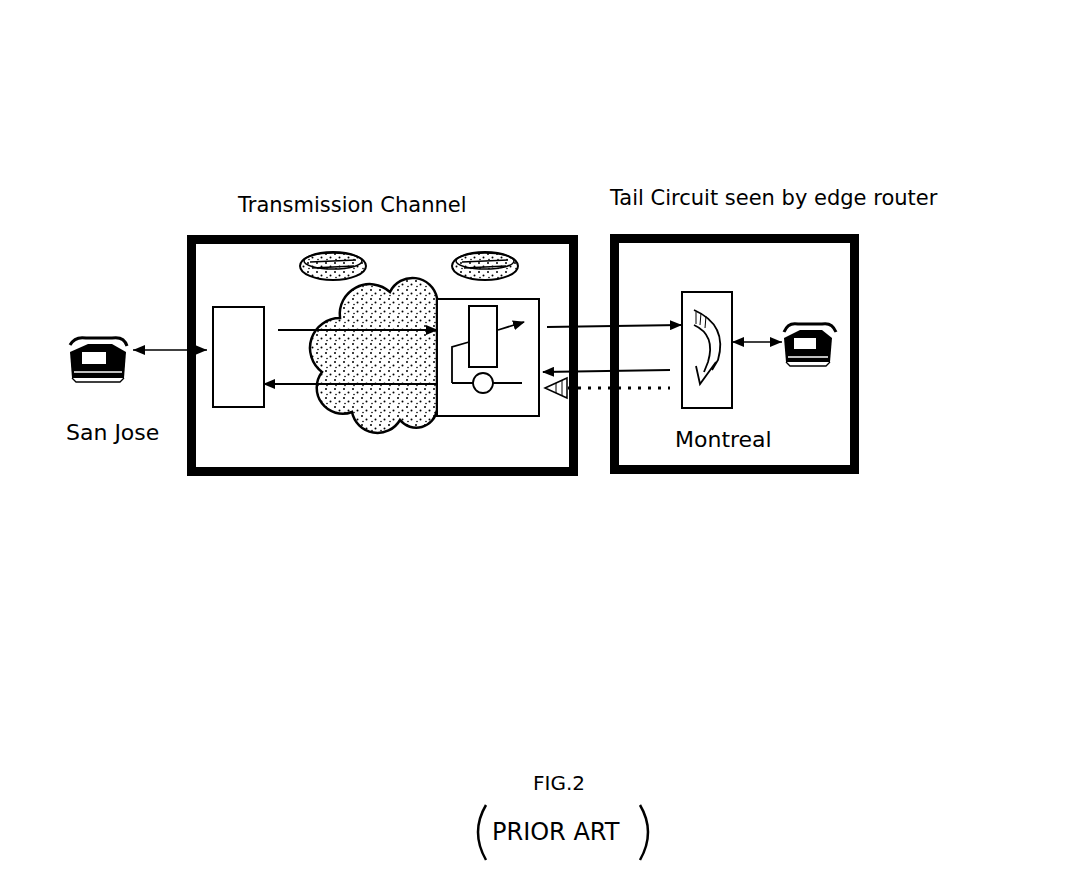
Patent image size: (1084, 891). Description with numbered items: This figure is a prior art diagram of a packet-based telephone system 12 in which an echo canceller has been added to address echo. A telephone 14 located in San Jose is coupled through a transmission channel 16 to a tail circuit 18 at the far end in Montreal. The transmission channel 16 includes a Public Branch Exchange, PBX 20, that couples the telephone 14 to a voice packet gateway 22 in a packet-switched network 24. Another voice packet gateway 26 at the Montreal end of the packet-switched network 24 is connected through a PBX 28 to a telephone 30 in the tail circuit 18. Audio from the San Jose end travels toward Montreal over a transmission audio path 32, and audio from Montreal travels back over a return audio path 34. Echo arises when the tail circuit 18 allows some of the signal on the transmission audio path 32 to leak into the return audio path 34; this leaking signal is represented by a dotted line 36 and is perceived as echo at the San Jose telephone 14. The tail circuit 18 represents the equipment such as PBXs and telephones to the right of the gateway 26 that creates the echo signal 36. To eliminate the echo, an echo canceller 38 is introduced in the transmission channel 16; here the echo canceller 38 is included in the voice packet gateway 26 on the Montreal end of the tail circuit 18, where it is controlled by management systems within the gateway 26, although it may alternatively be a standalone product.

The packet-based telephone system 12 is at (830, 80).
The telephone 14 is at (85, 337).
The transmission channel 16 is at (467, 477).
The tail circuit 18 is at (859, 252).
The Public Branch Exchange (PBX) 20 is at (252, 346).
The voice packet gateway 22 is at (368, 267).
The packet-switched network 24 is at (327, 400).
The voice packet gateway 26 is at (508, 250).
The PBX 28 is at (733, 292).
The telephone 30 is at (805, 366).
The transmission audio path 32 is at (304, 328).
The return audio path 34 is at (293, 380).
The dotted line (leaking audio signal / echo signal) 36 is at (637, 393).
The echo canceller 38 is at (521, 299).